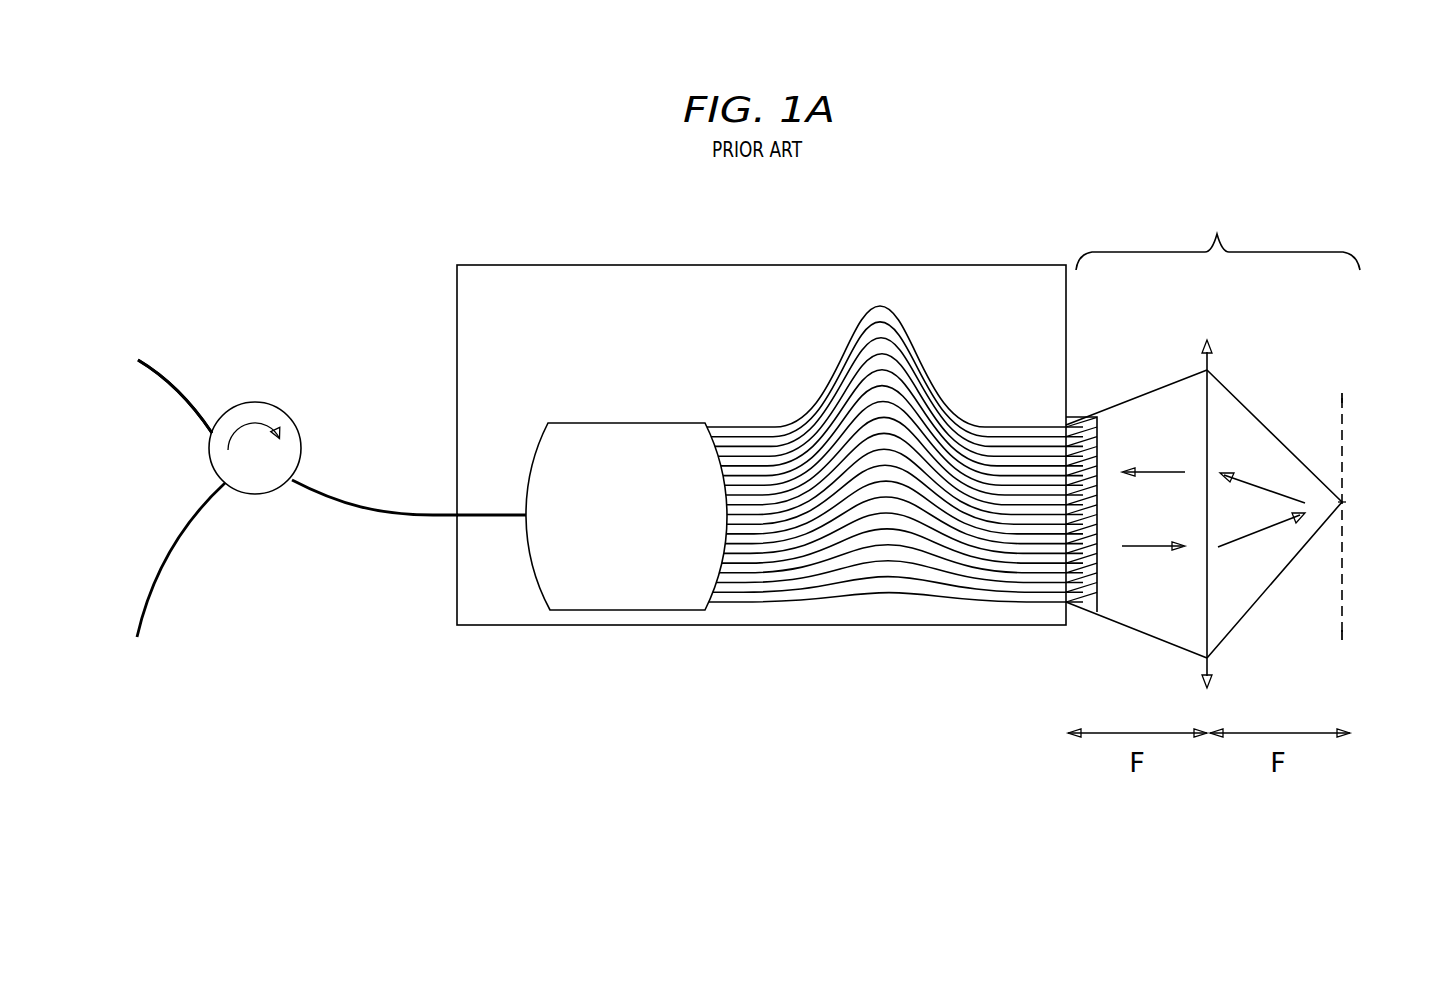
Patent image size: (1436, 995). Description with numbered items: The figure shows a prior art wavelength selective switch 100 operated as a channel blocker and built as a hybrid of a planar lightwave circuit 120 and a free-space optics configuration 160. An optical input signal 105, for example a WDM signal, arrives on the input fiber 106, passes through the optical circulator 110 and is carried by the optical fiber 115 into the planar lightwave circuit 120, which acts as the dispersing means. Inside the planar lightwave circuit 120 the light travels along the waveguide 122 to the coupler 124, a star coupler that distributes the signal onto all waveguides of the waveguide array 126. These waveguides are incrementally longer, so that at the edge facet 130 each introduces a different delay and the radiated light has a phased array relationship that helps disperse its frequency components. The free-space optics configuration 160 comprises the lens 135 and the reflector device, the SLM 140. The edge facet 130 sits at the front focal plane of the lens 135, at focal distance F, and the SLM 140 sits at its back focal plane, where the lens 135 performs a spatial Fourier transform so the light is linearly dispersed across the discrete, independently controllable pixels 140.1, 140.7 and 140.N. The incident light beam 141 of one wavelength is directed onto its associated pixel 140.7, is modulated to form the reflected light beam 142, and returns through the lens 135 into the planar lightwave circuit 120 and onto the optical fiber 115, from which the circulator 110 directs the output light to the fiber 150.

The wavelength selective switch (WSS) 100 is at (174, 142).
The optical input signal 105 is at (168, 370).
The input fiber 106 is at (167, 388).
The optical circulator 110 is at (255, 424).
The optical fiber 115 is at (375, 518).
The planar lightwave circuit (PLC) 120 is at (514, 322).
The waveguide 122 is at (491, 495).
The coupler 124 is at (626, 493).
The waveguide array 126 is at (895, 454).
The edge facet 130 is at (1066, 403).
The lens 135 is at (1232, 494).
The spatial light modulator (SLM) 140 is at (1340, 498).
The pixel 140.1 is at (1342, 398).
The pixel 140.7 is at (1342, 502).
The pixel 140.N is at (1342, 635).
The incident light beam 141 is at (1261, 546).
The reflected light beam 142 is at (1262, 476).
The fiber 150 is at (160, 581).
The free-space optics configuration 160 is at (1218, 236).